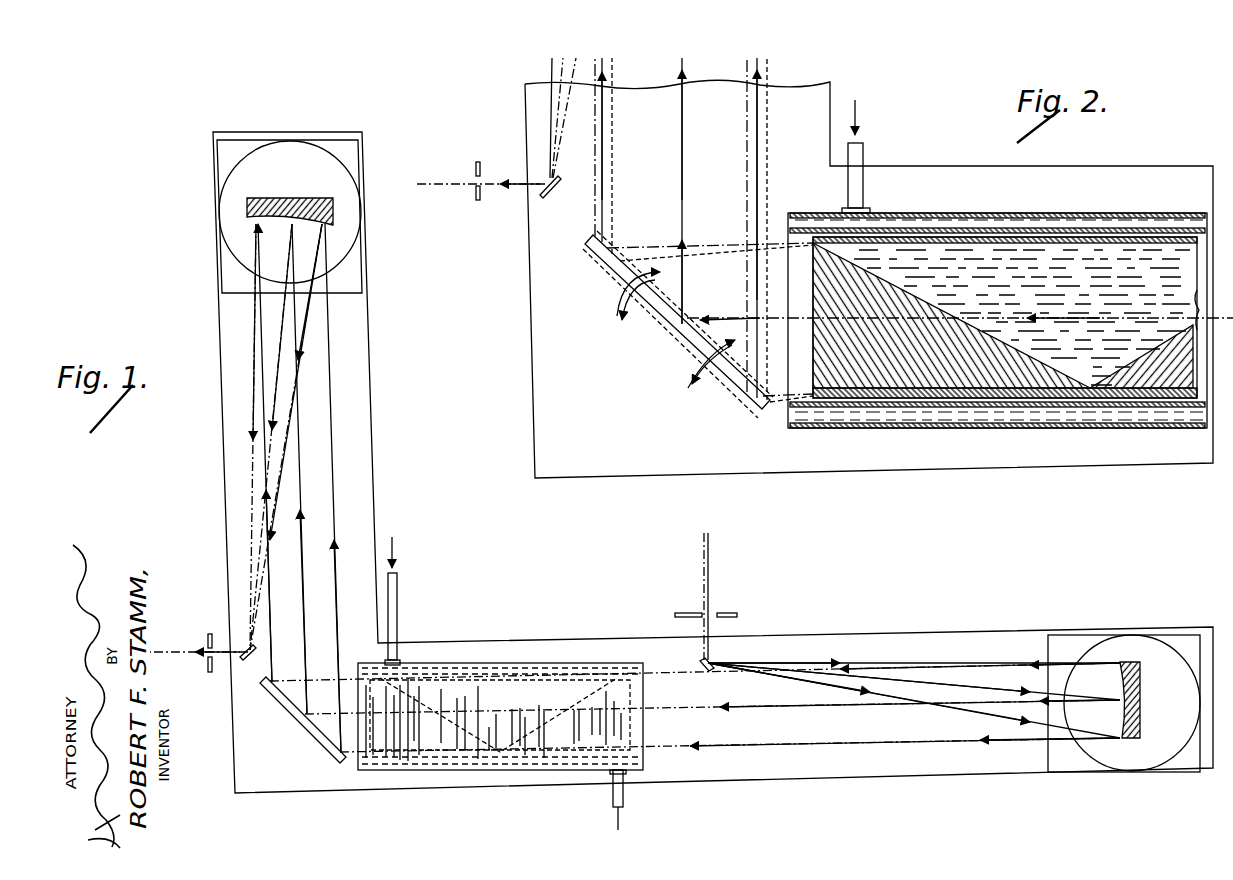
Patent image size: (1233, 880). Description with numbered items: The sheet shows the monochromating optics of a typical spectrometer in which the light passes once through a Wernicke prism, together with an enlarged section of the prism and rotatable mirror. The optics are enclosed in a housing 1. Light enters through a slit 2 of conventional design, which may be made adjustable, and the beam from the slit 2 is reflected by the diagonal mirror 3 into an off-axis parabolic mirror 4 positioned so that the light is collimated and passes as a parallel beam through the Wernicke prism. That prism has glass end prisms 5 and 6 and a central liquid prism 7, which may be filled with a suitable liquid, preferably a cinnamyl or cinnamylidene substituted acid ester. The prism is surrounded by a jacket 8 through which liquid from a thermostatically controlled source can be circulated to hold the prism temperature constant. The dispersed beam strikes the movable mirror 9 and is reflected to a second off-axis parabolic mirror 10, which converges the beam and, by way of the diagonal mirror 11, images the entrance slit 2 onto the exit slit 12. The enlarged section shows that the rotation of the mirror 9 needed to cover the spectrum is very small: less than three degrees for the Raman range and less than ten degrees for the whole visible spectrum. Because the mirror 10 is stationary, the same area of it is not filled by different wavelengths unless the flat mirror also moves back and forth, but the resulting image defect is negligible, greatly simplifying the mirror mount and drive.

In FIG. 1, the housing 1 is at (924, 638).
In FIG. 2, the housing 1 is at (962, 466).
In FIG. 1, the slit 2 is at (680, 615).
In FIG. 1, the diagonal mirror 3 is at (703, 670).
In FIG. 1, the off-axis parabolic mirror 4 is at (1127, 663).
In FIG. 1, the glass end prism 5 is at (582, 733).
In FIG. 2, the glass end prism 5 is at (1167, 367).
In FIG. 1, the glass end prism 6 is at (418, 733).
In FIG. 2, the glass end prism 6 is at (905, 367).
In FIG. 1, the central liquid prism 7 is at (507, 693).
In FIG. 2, the central liquid prism 7 is at (1052, 292).
In FIG. 1, the jacket 8 is at (645, 768).
In FIG. 2, the jacket 8 is at (1048, 422).
In FIG. 1, the movable mirror 9 is at (290, 712).
In FIG. 2, the movable mirror 9 is at (607, 268).
In FIG. 1, the stationary mirror 10 is at (247, 217).
In FIG. 1, the diagonal mirror 11 is at (243, 660).
In FIG. 2, the diagonal mirror 11 is at (550, 199).
In FIG. 1, the exit slit 12 is at (208, 638).
In FIG. 2, the exit slit 12 is at (478, 202).